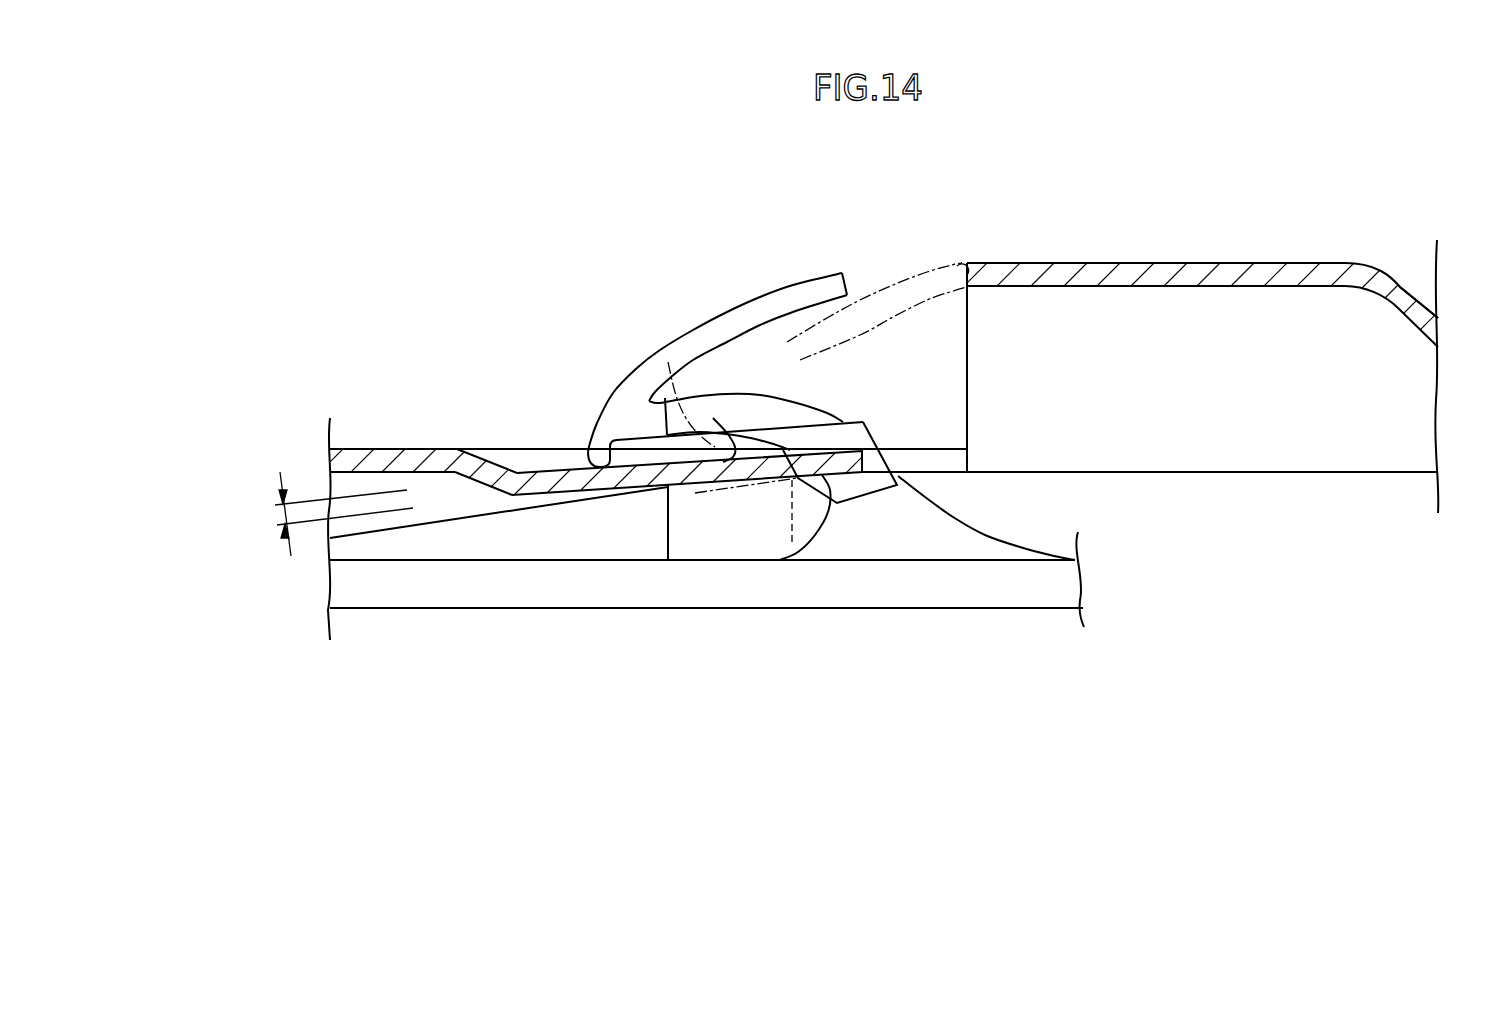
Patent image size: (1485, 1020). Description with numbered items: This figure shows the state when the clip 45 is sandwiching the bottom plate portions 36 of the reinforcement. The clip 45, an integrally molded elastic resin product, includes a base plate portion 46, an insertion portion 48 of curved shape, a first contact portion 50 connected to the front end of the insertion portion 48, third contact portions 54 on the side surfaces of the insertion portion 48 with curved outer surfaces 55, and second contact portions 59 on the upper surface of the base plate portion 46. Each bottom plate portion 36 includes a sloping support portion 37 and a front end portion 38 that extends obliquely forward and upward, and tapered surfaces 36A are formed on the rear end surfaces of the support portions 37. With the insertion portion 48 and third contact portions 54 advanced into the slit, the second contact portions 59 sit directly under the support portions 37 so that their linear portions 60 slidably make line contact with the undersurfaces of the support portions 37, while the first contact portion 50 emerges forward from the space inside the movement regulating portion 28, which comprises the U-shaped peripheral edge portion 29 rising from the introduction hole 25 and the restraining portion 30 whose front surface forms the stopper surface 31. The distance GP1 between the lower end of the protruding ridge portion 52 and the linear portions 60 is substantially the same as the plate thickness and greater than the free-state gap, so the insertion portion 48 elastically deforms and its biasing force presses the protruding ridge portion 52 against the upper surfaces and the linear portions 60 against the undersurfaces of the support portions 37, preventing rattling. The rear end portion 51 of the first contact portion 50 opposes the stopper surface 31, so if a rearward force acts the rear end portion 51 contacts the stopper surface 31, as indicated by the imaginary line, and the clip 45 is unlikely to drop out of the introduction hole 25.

The introduction hole 25 is at (937, 455).
The movement regulating portion 28 is at (1353, 273).
The peripheral edge portion 29 is at (1117, 327).
The restraining portion 30 is at (1220, 270).
The stopper surface 31 is at (957, 268).
The bottom plate portion 36 is at (384, 452).
The tapered surface 36A is at (883, 462).
The support portion 37 is at (547, 478).
The front end portion 38 is at (484, 458).
The clip 45 is at (697, 297).
The base plate portion 46 is at (963, 590).
The insertion portion 48 is at (802, 413).
The first contact portion 50 is at (773, 293).
The rear end portion 51 is at (838, 270).
The protruding ridge portion 52 is at (597, 460).
The third contact portion 54 is at (853, 420).
The outer surface 55 is at (873, 443).
The second contact portion 59 is at (547, 543).
The linear portion 60 is at (662, 490).
The distance GP1 is at (280, 512).